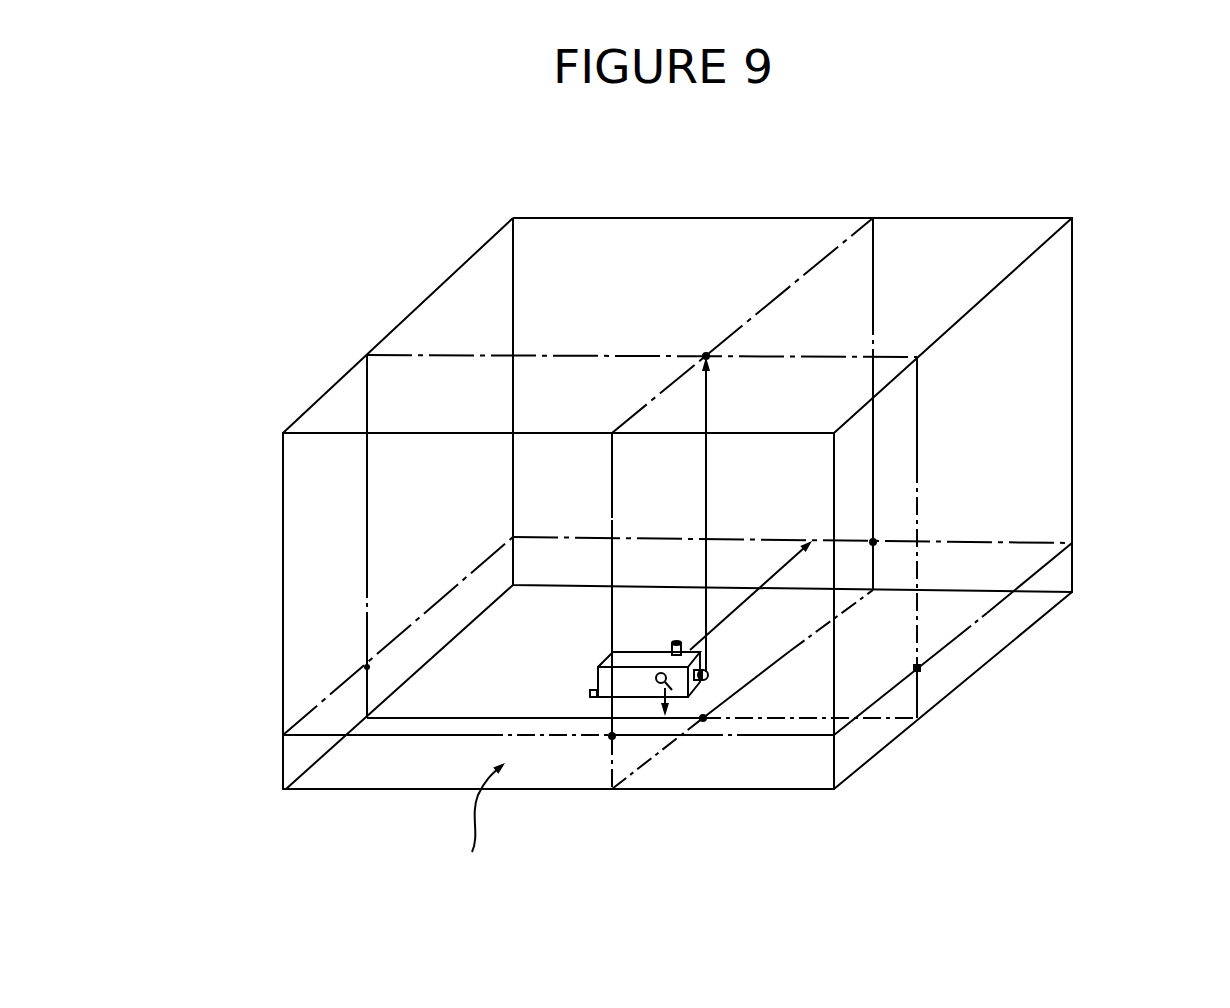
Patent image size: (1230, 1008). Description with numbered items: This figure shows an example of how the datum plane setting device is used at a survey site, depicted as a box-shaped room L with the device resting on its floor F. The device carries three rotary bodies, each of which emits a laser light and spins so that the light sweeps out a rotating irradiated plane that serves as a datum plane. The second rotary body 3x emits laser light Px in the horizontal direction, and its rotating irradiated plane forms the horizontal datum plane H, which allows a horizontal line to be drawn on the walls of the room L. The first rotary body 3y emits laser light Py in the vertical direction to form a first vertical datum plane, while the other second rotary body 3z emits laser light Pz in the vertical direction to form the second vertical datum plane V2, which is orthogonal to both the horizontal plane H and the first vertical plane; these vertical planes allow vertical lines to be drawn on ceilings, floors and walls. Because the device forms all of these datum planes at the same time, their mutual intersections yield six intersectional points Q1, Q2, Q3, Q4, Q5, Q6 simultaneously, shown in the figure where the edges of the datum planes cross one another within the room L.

The room L is at (1033, 373).
The horizontal plane H is at (957, 637).
The second vertical plane V2 is at (767, 305).
The floor F is at (477, 825).
The laser light Px is at (720, 622).
The laser light Py is at (707, 518).
The laser light Pz is at (660, 705).
The second rotary body 3x is at (677, 647).
The first rotary body 3y is at (708, 680).
The second rotary body 3z is at (670, 684).
The intersectional point Q1 is at (706, 356).
The intersectional point Q2 is at (873, 542).
The intersectional point Q3 is at (612, 737).
The intersectional point Q4 is at (917, 668).
The intersectional point Q5 is at (703, 718).
The intersectional point Q6 is at (367, 667).